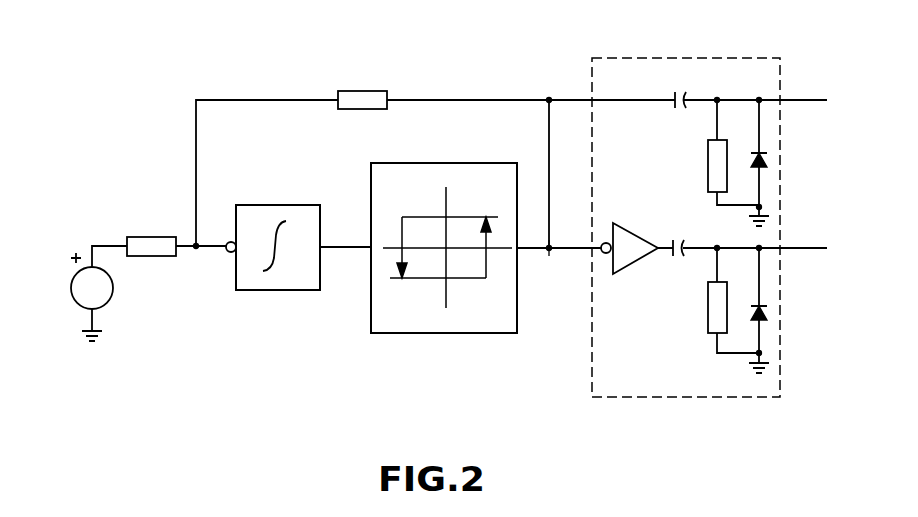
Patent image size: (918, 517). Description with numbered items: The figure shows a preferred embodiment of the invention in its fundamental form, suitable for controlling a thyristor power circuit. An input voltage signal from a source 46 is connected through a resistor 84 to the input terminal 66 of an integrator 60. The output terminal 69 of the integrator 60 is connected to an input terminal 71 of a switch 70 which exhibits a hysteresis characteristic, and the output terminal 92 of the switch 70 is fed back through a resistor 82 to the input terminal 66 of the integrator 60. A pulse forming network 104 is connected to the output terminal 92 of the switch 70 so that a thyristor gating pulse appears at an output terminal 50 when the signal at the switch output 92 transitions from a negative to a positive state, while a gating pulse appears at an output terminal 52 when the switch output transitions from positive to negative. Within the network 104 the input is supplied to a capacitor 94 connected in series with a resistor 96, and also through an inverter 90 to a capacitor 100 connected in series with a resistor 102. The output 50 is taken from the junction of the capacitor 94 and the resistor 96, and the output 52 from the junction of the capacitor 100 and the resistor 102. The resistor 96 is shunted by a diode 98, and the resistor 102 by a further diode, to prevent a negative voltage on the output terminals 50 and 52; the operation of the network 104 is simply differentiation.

The source 46 is at (80, 304).
The resistor 84 is at (150, 236).
The input terminal 66 is at (223, 259).
The integrator 60 is at (286, 204).
The output terminal 69 is at (327, 241).
The input terminal 71 is at (365, 258).
The resistor 82 is at (373, 90).
The switch 70 is at (453, 162).
The output terminal 92 is at (552, 244).
The pulse forming network 104 is at (690, 57).
The capacitor 94 is at (672, 108).
The resistor 96 is at (708, 170).
The diode 98 is at (756, 163).
The inverter 90 is at (634, 235).
The capacitor 100 is at (688, 244).
The resistor 102 is at (707, 303).
The output terminal 50 is at (805, 98).
The output terminal 52 is at (807, 246).